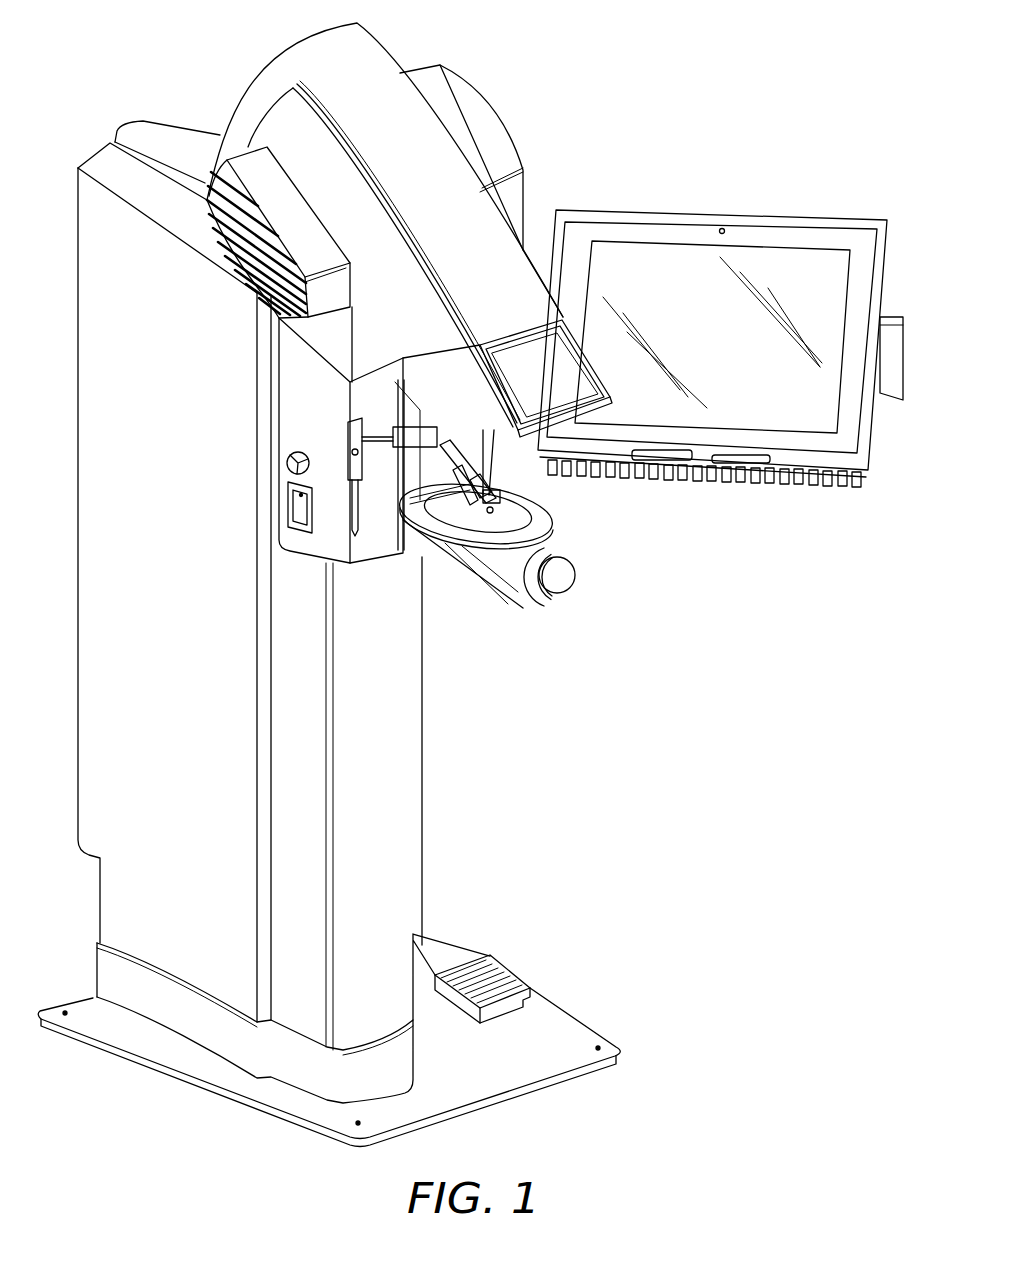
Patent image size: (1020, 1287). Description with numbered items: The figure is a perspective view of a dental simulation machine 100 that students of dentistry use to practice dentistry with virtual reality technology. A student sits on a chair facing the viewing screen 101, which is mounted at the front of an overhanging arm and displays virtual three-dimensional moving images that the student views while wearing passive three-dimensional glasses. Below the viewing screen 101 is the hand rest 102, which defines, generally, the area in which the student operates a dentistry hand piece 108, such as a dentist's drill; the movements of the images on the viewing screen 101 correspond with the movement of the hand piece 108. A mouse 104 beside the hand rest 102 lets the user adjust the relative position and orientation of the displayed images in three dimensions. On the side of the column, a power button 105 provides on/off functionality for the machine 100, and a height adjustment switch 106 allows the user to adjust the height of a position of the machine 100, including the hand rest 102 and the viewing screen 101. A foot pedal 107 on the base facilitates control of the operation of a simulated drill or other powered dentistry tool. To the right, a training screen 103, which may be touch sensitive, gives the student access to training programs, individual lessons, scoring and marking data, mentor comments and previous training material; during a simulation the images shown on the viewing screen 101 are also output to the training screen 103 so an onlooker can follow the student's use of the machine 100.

The dental simulation machine 100 is at (674, 71).
The viewing screen 101 is at (562, 365).
The hand rest 102 is at (549, 520).
The training screen 103 is at (795, 272).
The mouse 104 is at (572, 576).
The power button 105 is at (288, 467).
The height adjustment switch 106 is at (293, 511).
The foot pedal 107 is at (497, 978).
The dentistry hand piece 108 is at (493, 464).